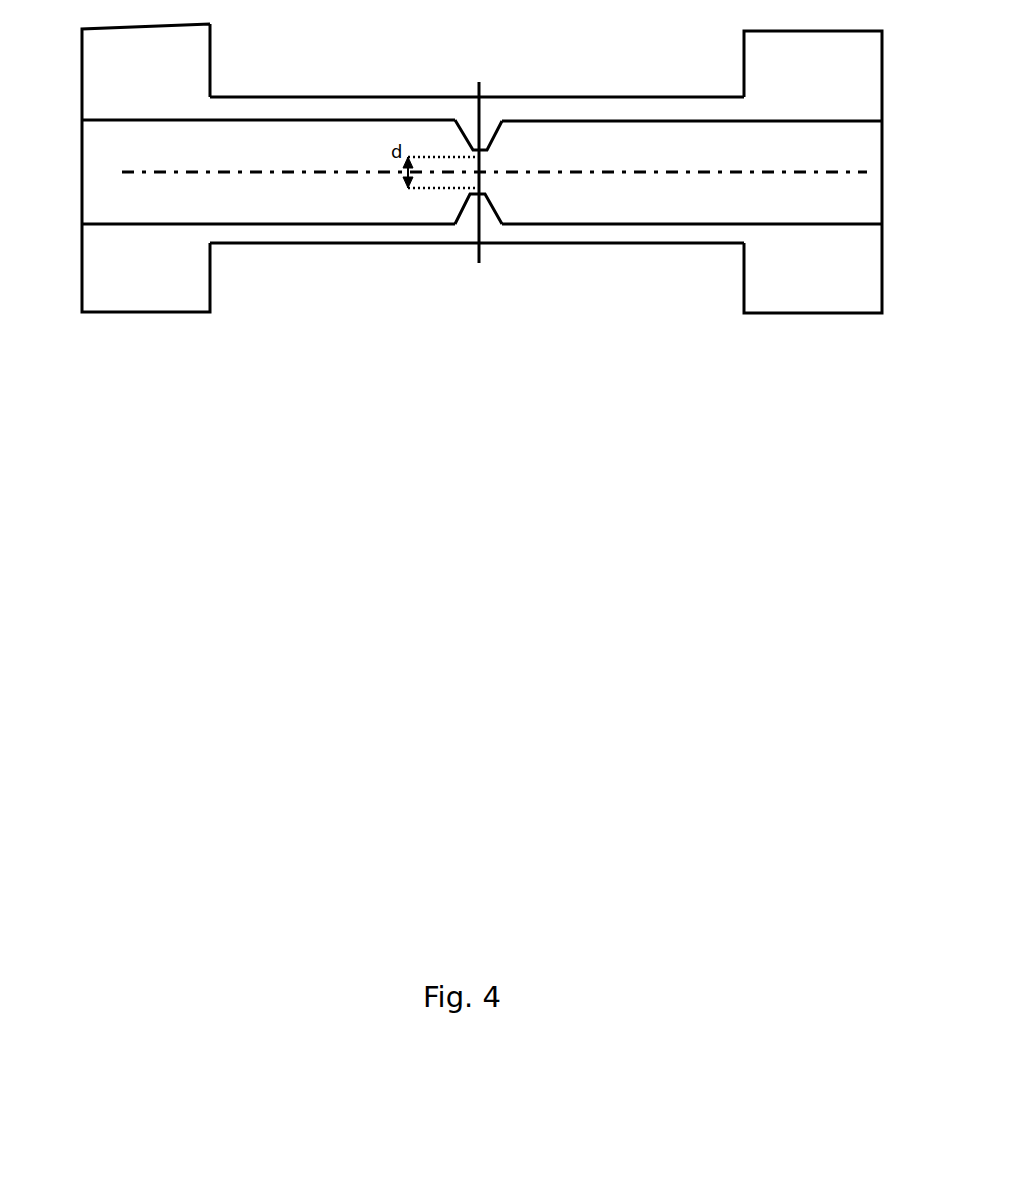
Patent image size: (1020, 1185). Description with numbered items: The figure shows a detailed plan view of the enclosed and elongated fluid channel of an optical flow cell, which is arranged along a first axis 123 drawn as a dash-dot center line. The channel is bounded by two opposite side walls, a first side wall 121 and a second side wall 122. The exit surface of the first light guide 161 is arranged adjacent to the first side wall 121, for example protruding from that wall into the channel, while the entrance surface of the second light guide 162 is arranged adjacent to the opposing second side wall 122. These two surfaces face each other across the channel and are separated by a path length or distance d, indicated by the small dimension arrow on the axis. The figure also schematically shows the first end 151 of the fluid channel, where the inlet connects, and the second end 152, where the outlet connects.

The first end 151 is at (139, 194).
The second end 152 is at (807, 203).
The first side wall 121 is at (577, 226).
The second side wall 122 is at (563, 117).
The first axis 123 is at (728, 172).
The first light guide 161 is at (475, 232).
The second light guide 162 is at (472, 131).